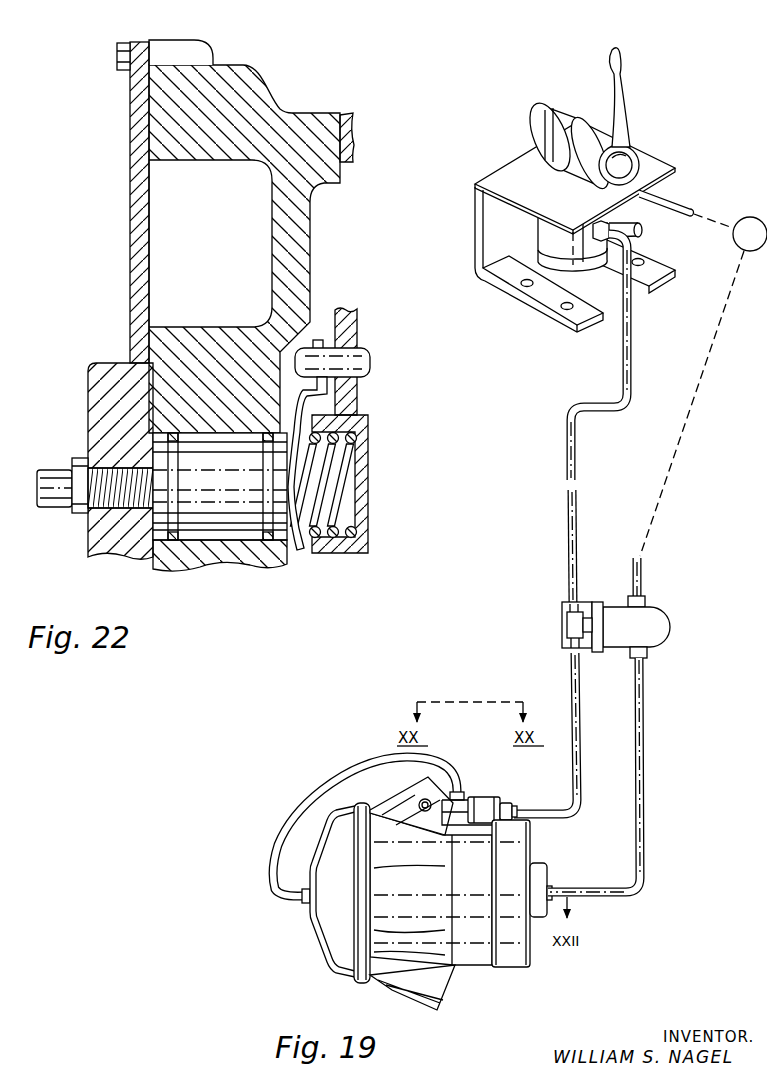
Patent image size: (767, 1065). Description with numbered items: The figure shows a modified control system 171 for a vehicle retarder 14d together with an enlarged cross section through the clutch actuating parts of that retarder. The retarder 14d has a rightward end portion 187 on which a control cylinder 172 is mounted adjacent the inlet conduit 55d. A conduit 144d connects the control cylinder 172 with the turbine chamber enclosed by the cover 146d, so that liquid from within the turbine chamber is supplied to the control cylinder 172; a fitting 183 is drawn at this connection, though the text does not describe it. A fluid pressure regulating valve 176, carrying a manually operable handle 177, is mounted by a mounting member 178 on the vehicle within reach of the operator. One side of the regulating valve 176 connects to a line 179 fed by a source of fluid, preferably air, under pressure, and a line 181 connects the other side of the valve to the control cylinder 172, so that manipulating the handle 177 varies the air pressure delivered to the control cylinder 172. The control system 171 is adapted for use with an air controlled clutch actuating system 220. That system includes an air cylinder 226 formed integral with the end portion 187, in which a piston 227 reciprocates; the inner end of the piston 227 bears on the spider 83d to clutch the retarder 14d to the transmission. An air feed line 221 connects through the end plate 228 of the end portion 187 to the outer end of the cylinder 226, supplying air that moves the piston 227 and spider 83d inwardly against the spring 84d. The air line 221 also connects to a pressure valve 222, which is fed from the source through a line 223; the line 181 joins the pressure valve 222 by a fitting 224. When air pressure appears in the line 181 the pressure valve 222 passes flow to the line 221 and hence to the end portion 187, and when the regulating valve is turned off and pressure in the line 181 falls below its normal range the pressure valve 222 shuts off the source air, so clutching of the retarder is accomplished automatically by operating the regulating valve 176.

In FIG. 22, the end portion 187 is at (286, 83).
In FIG. 19, the end portion 187 is at (508, 960).
In FIG. 22, the end plate 228 is at (137, 166).
In FIG. 22, the air feed line 221 is at (53, 470).
In FIG. 19, the air feed line 221 is at (594, 897).
In FIG. 22, the air cylinder 226 is at (176, 562).
In FIG. 22, the piston 227 is at (223, 522).
In FIG. 22, the spider 83d is at (300, 551).
In FIG. 22, the spring 84d is at (334, 466).
In FIG. 19, the fluid pressure regulating valve 176 is at (523, 108).
In FIG. 19, the handle 177 is at (621, 66).
In FIG. 19, the mounting member 178 is at (476, 243).
In FIG. 19, the line 179 is at (684, 205).
In FIG. 19, the control system 171 is at (536, 524).
In FIG. 19, the line 181 is at (567, 432).
In FIG. 19, the line 223 is at (645, 579).
In FIG. 19, the pressure valve 222 is at (657, 631).
In FIG. 19, the fitting 224 is at (566, 628).
In FIG. 19, the clutch actuating system 220 is at (637, 800).
In FIG. 19, the fitting 183 is at (479, 797).
In FIG. 19, the control cylinder 172 is at (512, 791).
In FIG. 19, the conduit 144d is at (291, 818).
In FIG. 19, the inlet conduit 55d is at (403, 792).
In FIG. 19, the cover 146d is at (328, 928).
In FIG. 19, the retarder 14d is at (393, 877).